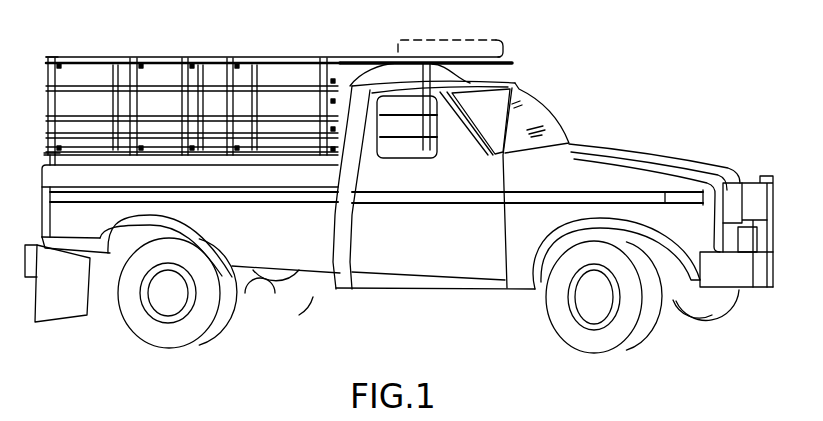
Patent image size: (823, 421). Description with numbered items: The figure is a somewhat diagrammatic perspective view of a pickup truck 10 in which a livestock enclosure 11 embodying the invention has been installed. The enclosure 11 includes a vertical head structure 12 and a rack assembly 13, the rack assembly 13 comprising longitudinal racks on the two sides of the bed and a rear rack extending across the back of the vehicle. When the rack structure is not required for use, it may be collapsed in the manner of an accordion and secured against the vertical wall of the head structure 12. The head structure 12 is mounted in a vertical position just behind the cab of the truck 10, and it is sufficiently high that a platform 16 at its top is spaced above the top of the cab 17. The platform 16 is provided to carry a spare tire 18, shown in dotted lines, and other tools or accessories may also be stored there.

The pickup truck 10 is at (413, 250).
The livestock enclosure 11 is at (243, 52).
The vertical head structure 12 is at (372, 52).
The rack assembly 13 is at (50, 107).
The platform 16 is at (430, 57).
The top of the cab 17 is at (514, 84).
The spare tire 18 is at (503, 48).